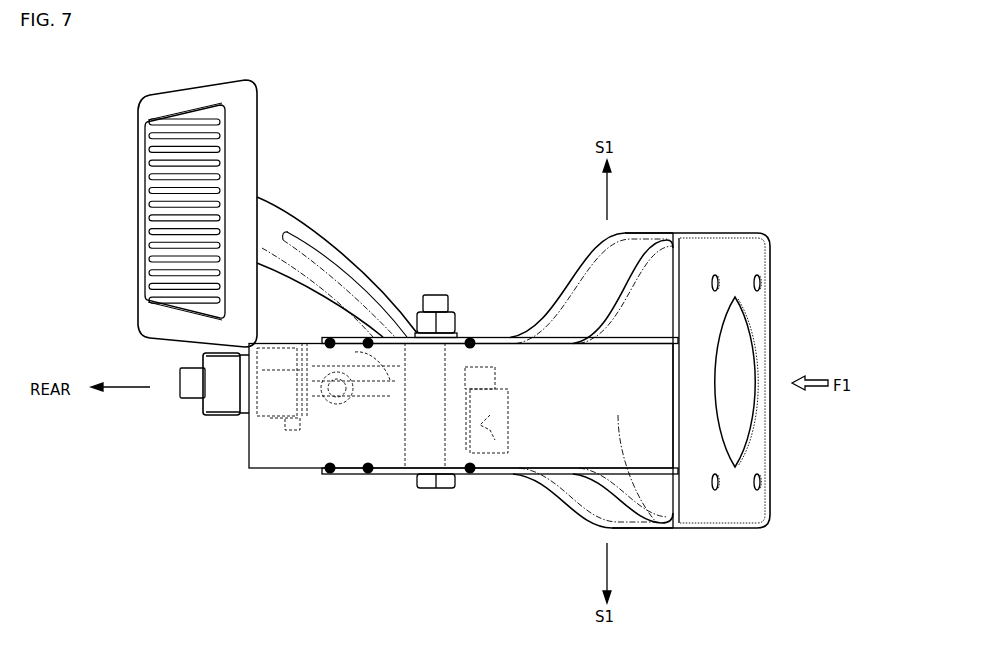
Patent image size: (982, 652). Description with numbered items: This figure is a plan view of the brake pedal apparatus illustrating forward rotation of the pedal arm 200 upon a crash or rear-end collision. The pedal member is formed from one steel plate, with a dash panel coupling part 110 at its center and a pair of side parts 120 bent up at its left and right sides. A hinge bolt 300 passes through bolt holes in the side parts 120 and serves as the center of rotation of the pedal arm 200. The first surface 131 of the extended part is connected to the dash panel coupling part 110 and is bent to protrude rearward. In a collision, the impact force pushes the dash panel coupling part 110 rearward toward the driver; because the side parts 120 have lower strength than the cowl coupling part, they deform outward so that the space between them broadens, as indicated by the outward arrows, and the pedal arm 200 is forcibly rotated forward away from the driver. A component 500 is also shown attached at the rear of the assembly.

The dash panel coupling part 110 is at (770, 305).
The side parts 120 is at (582, 262).
The first surface 131 is at (657, 523).
The pedal arm 200 is at (325, 250).
The hinge bolt 300 is at (437, 490).
The connector 500 is at (223, 390).